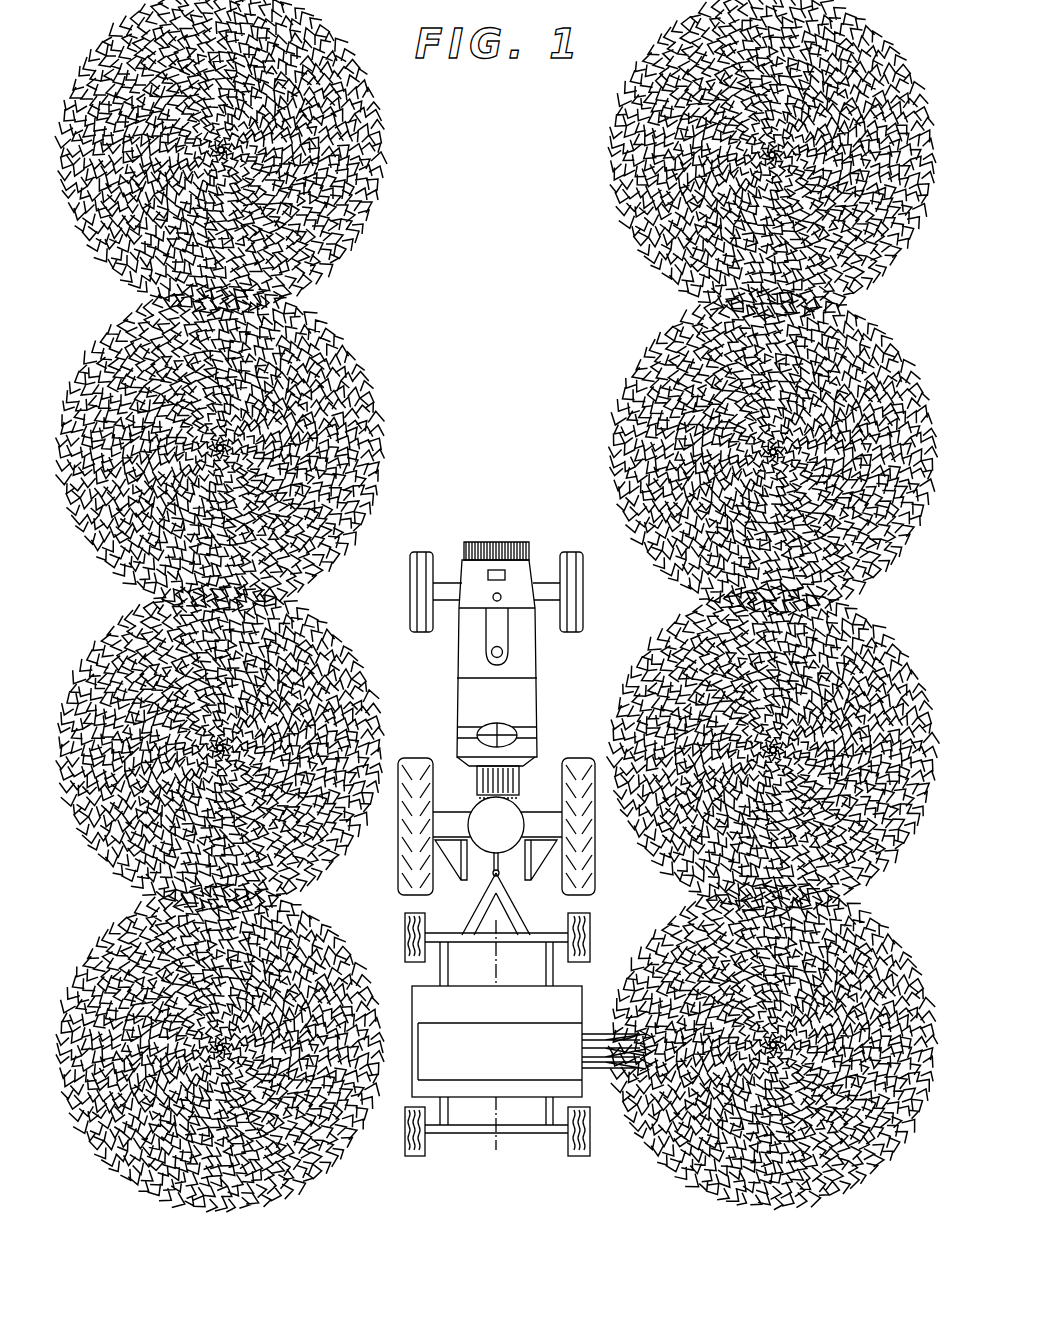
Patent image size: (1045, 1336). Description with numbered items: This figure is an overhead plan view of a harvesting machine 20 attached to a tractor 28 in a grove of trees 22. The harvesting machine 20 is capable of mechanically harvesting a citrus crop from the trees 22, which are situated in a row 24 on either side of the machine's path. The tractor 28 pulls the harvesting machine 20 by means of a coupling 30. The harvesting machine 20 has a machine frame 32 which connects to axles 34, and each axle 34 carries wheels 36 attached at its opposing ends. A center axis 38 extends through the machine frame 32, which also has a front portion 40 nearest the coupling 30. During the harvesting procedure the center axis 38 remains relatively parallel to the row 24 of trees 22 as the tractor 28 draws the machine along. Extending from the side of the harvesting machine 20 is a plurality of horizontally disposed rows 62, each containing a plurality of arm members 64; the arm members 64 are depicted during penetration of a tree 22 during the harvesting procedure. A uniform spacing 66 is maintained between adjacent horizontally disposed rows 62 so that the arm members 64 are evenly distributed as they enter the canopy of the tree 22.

The harvesting machine 20 is at (496, 1040).
The trees 22 is at (522, 655).
The row 24 is at (340, 158).
The tractor 28 is at (470, 711).
The coupling 30 is at (475, 905).
The machine frame 32 is at (555, 972).
The axles 34 is at (445, 928).
The wheels 36 is at (416, 1157).
The center axis 38 is at (497, 1112).
The front portion 40 is at (548, 930).
The horizontally disposed rows 62 is at (595, 1056).
The arm members 64 is at (598, 1077).
The uniform spacing 66 is at (600, 1035).